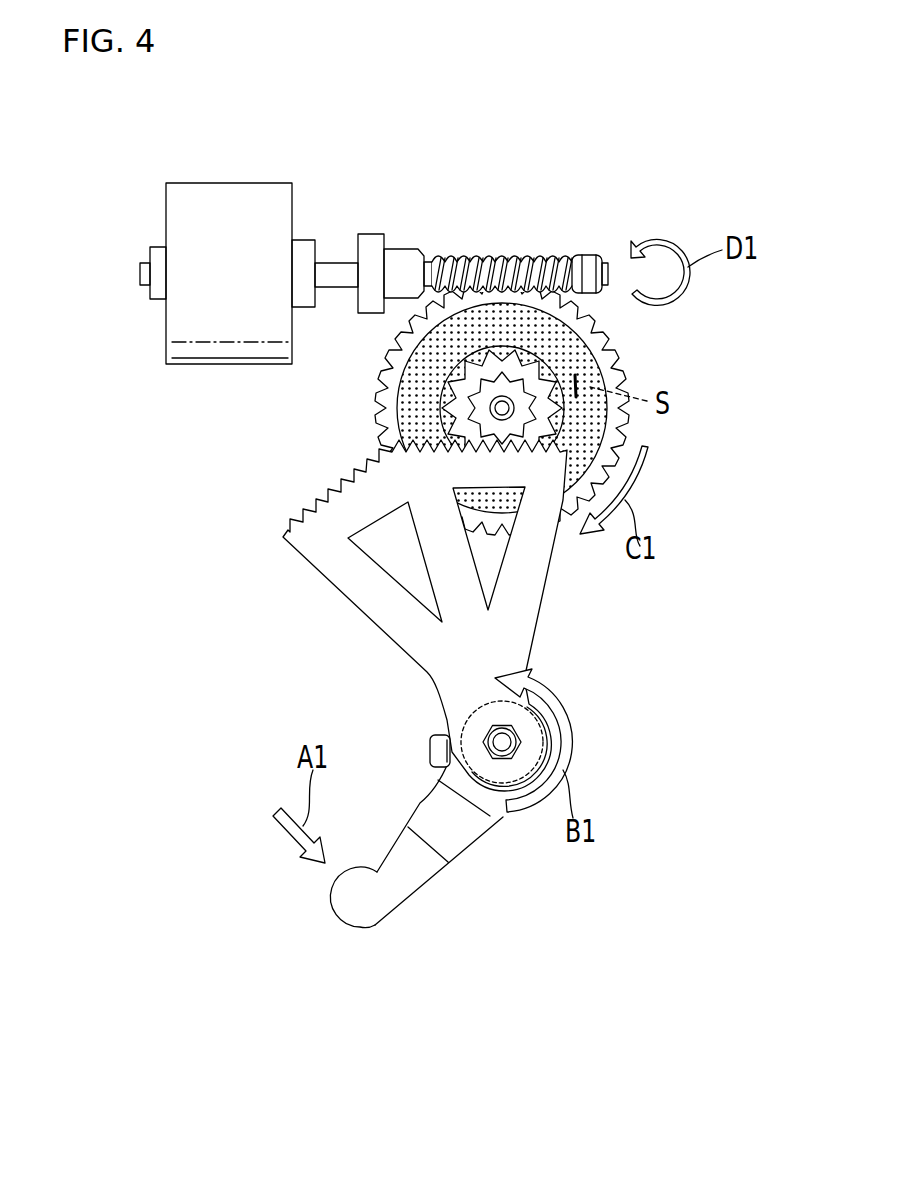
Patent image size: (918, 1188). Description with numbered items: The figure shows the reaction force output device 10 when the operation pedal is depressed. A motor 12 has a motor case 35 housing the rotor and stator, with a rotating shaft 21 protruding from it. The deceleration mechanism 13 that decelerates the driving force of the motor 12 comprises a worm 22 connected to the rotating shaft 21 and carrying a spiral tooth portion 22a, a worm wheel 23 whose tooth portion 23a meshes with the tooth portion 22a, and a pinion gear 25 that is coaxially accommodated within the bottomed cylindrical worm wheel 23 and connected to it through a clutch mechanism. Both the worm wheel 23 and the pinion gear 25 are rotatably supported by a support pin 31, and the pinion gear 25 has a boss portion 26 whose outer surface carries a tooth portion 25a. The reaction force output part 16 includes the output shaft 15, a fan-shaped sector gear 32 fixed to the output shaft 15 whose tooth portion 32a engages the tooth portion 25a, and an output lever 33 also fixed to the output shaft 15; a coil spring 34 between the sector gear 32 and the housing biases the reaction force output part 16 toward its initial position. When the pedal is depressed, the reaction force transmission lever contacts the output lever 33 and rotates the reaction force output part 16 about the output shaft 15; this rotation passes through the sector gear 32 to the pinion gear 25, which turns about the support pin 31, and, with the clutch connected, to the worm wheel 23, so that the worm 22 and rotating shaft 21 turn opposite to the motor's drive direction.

The reaction force output device 10 is at (682, 157).
The motor 12 is at (302, 163).
The deceleration mechanism 13 is at (360, 450).
The output shaft 15 is at (500, 742).
The reaction force output part 16 is at (422, 888).
The rotating shaft 21 is at (340, 263).
The worm 22 is at (552, 255).
The tooth portion 22a is at (520, 253).
The worm wheel 23 is at (378, 417).
The tooth portion 23a is at (380, 403).
The pinion gear 25 is at (420, 378).
The tooth portion 25a is at (452, 415).
The boss portion 26 is at (493, 390).
The support pin 31 is at (512, 400).
The sector gear 32 is at (515, 632).
The tooth portion 32a is at (548, 423).
The output lever 33 is at (362, 912).
The coil spring 34 is at (430, 746).
The motor case 35 is at (233, 183).